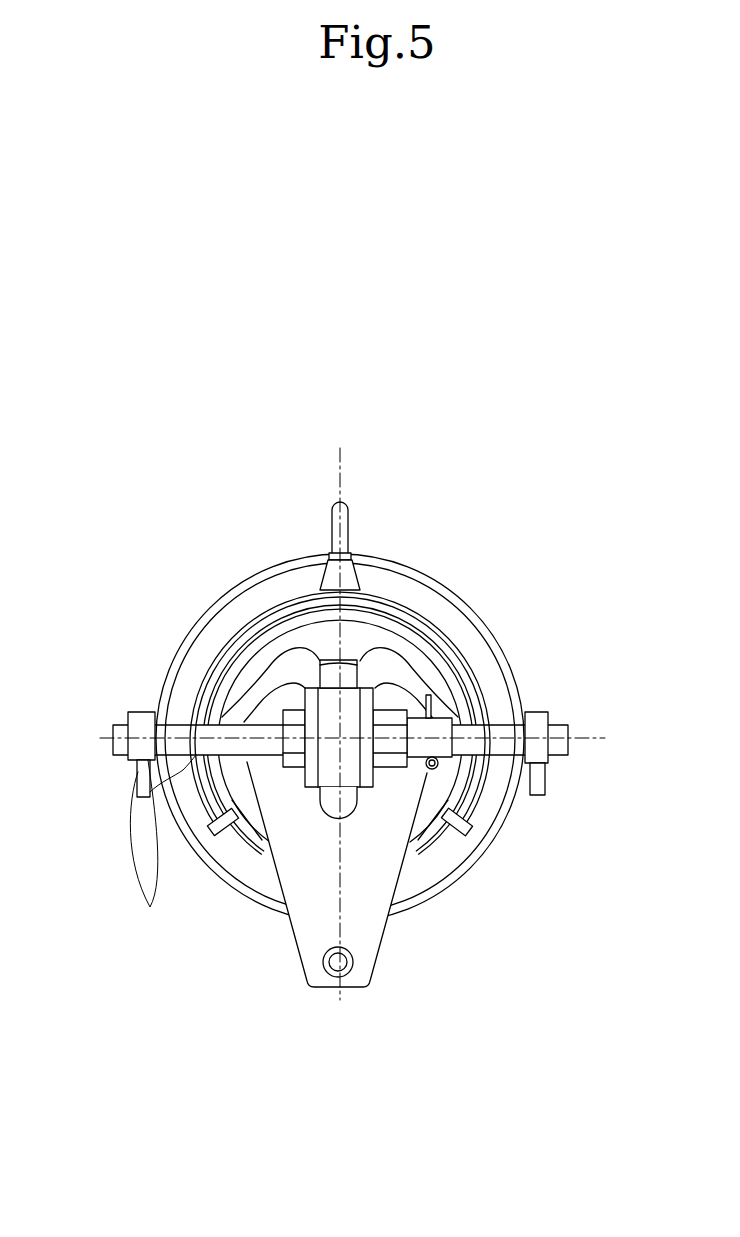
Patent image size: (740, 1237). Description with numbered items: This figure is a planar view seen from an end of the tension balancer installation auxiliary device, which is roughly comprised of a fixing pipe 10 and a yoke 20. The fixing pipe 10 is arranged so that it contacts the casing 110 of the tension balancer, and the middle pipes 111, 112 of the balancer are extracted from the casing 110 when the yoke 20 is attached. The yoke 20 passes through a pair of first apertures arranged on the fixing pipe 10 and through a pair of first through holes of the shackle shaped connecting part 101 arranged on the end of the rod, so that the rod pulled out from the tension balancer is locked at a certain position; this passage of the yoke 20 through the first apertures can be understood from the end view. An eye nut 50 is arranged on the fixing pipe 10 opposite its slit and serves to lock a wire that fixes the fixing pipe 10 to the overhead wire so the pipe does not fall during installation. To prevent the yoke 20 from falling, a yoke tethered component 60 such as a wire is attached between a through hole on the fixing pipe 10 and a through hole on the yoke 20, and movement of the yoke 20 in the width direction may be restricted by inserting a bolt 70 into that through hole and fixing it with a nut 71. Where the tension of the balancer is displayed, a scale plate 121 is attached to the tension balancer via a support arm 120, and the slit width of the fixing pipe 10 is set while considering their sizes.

The fixing pipe 10 is at (473, 667).
The yoke 20 is at (563, 727).
The eye nut 50 is at (329, 509).
The yoke tethered component 60 is at (128, 835).
The bolt 70 is at (140, 712).
The nut 71 is at (130, 762).
The shackle shaped connecting part 101 is at (370, 685).
The casing 110 is at (477, 863).
The middle pipe 111 is at (238, 800).
The middle pipe 112 is at (350, 672).
The support arm 120 is at (340, 968).
The scale plate 121 is at (307, 940).